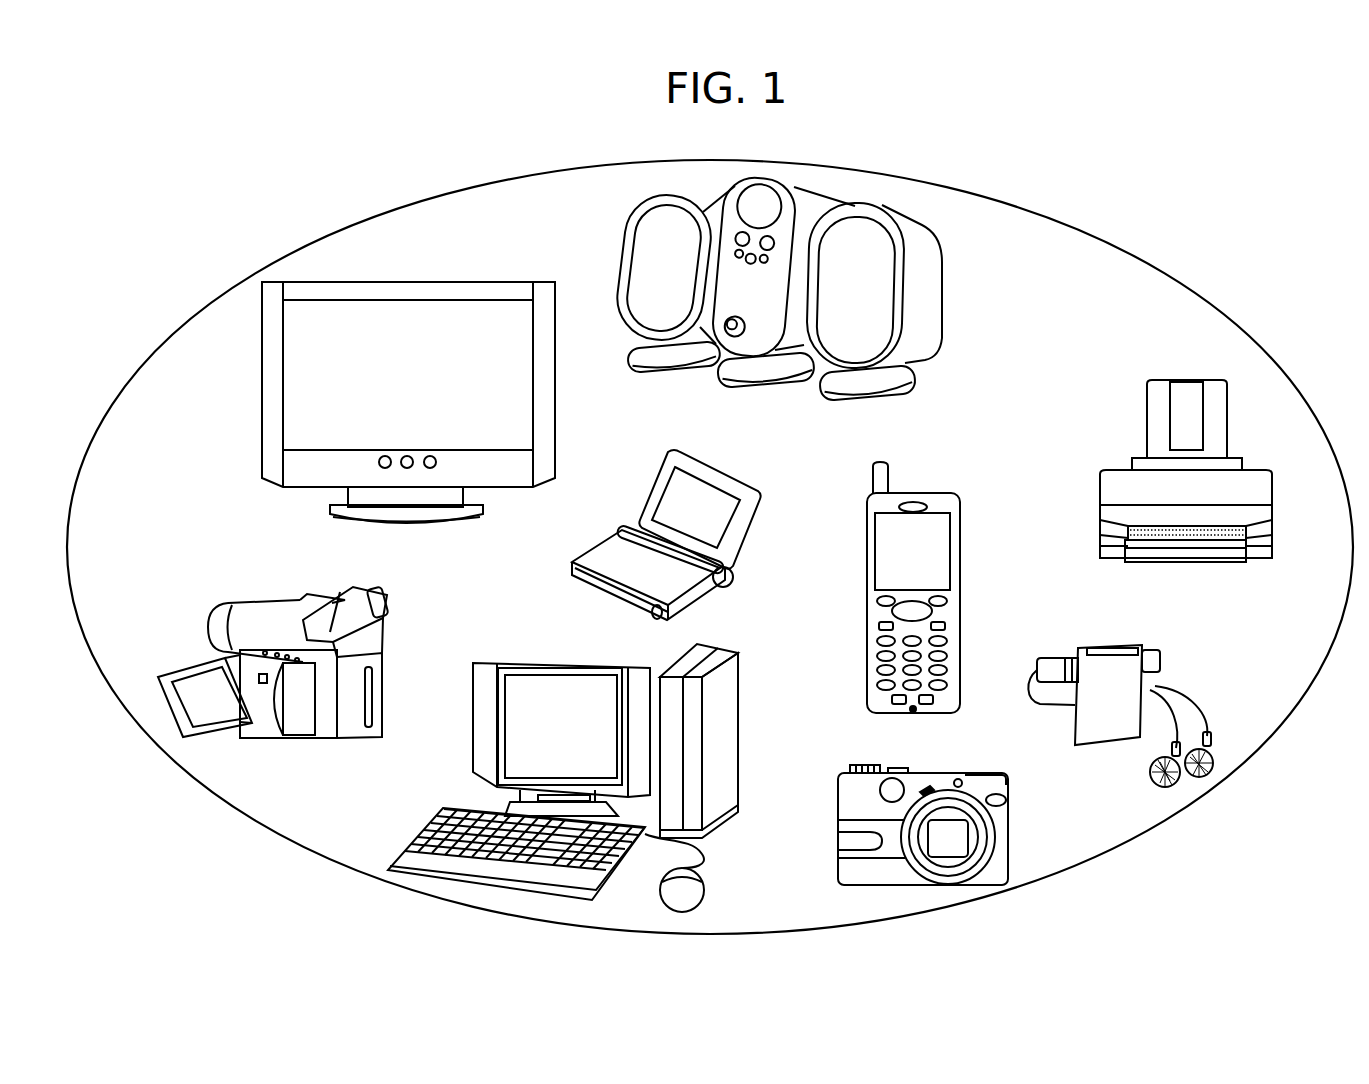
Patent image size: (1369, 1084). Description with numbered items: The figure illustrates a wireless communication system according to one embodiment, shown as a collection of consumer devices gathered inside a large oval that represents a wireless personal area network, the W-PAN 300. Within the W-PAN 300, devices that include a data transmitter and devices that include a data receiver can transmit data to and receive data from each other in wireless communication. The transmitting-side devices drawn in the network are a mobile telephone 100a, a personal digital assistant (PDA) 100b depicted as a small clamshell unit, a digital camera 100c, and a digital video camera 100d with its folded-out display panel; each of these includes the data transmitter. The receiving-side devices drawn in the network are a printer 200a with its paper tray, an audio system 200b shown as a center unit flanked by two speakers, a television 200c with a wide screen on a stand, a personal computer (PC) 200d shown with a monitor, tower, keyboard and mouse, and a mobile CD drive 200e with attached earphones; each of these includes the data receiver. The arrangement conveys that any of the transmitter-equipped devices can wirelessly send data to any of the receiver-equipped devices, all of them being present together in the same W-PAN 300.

The W-PAN 300 is at (1052, 216).
The television 200c is at (410, 282).
The audio system 200b is at (942, 273).
The printer 200a is at (1160, 382).
The mobile telephone 100a is at (907, 493).
The personal digital assistant (PDA) 100b is at (716, 470).
The digital video camera 100d is at (232, 605).
The personal computer (PC) 200d is at (562, 665).
The digital camera 100c is at (945, 772).
The mobile CD drive 200e is at (1110, 645).